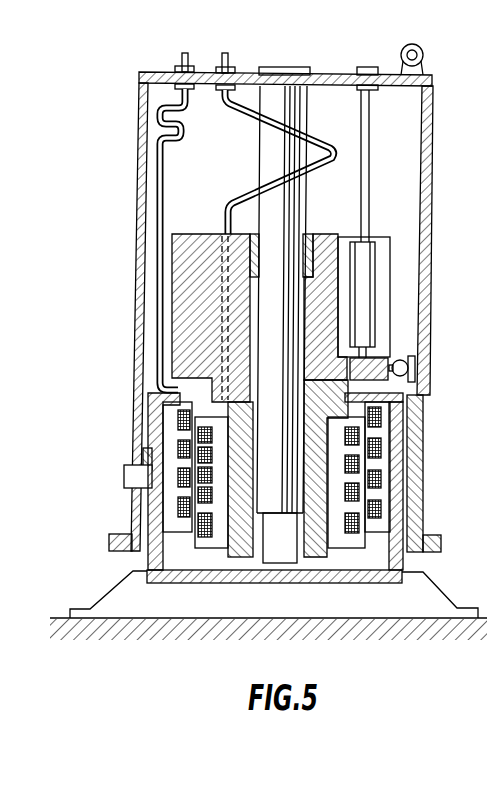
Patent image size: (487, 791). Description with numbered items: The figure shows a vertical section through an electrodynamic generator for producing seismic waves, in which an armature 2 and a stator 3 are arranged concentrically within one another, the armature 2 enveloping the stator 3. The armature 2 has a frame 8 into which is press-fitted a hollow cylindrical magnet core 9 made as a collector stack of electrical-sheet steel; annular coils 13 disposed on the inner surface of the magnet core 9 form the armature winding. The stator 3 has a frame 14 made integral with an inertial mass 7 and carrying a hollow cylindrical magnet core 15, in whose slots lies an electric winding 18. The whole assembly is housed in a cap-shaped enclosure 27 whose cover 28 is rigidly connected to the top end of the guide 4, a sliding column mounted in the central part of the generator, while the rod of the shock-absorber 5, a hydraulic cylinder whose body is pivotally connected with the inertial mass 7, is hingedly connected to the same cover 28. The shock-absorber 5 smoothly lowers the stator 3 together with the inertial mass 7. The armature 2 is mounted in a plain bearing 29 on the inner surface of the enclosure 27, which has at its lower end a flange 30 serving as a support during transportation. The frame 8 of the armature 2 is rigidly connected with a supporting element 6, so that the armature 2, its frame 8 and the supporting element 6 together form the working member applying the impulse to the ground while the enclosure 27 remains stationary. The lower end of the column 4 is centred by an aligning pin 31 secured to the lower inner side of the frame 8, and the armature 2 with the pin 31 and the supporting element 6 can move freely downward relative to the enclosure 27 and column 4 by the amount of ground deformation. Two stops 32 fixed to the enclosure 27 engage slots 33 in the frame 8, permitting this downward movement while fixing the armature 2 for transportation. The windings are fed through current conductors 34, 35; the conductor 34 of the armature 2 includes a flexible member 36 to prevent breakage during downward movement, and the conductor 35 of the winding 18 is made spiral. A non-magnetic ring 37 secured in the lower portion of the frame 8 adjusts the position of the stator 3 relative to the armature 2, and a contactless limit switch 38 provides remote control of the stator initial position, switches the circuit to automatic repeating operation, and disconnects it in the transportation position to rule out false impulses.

The armature 2 is at (383, 452).
The stator 3 is at (200, 232).
The guide 4 is at (305, 122).
The shock-absorber 5 is at (380, 270).
The supporting element 6 is at (445, 606).
The inertial mass 7 is at (180, 273).
The frame 8 is at (403, 403).
The magnet core 9 is at (384, 517).
The annular coils 13 is at (383, 480).
The frame 14 is at (253, 467).
The magnet core 15 is at (213, 447).
The electric winding 18 is at (212, 523).
The enclosure 27 is at (432, 197).
The cover 28 is at (148, 73).
The plain bearing 29 is at (407, 517).
The flange 30 is at (433, 541).
The aligning pin 31 is at (282, 556).
The stops 32 is at (125, 485).
The slots 33 is at (146, 457).
The current conductor 34 is at (185, 53).
The current conductor 35 is at (225, 53).
The flexible member 36 is at (158, 111).
The ring 37 is at (215, 570).
The contactless limit switch 38 is at (412, 365).